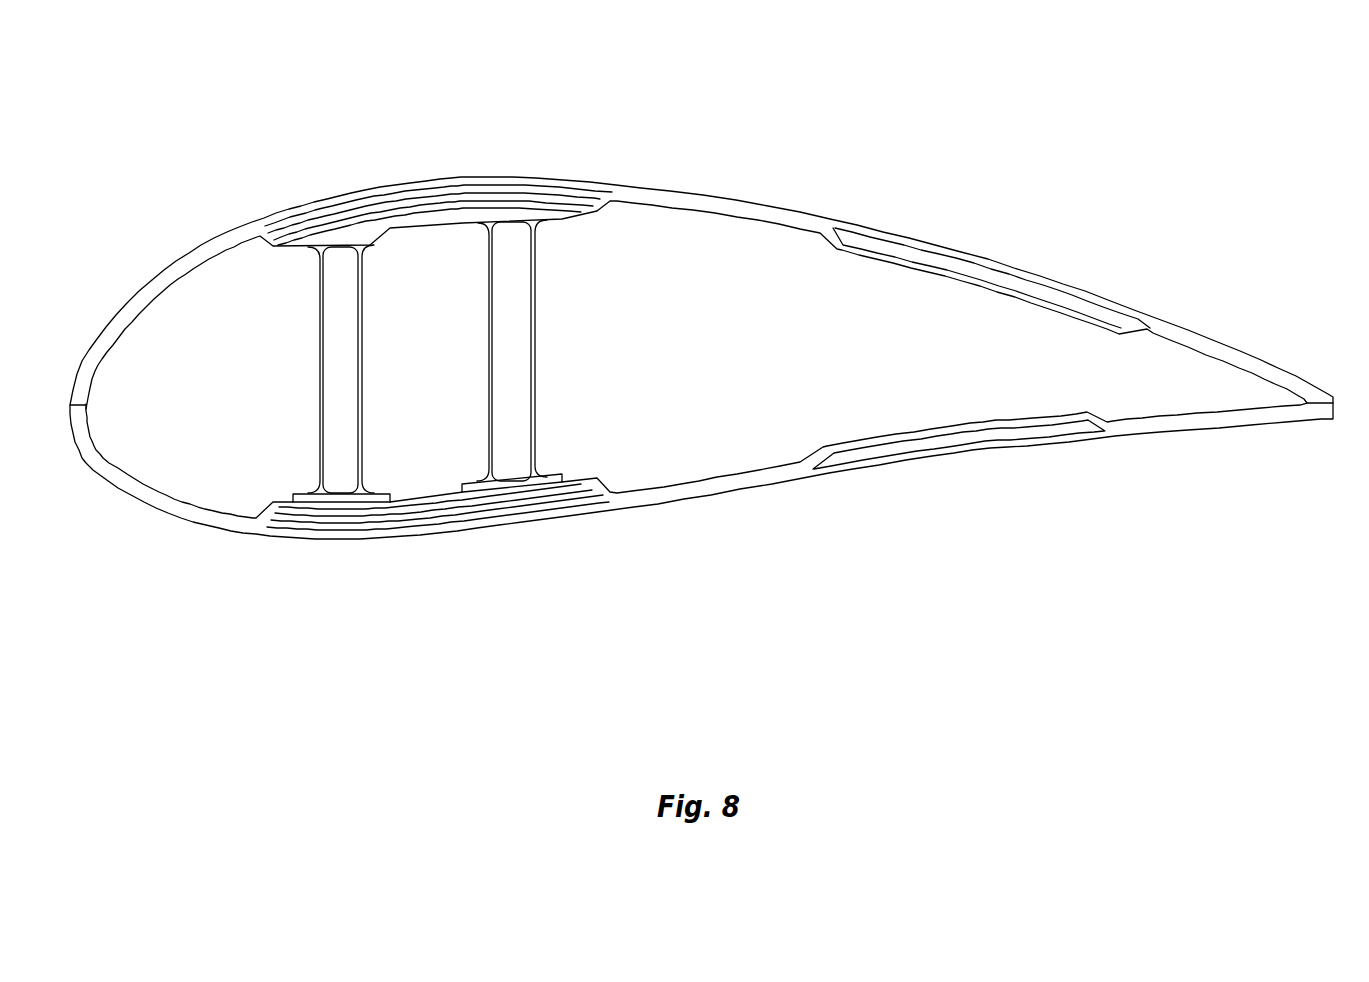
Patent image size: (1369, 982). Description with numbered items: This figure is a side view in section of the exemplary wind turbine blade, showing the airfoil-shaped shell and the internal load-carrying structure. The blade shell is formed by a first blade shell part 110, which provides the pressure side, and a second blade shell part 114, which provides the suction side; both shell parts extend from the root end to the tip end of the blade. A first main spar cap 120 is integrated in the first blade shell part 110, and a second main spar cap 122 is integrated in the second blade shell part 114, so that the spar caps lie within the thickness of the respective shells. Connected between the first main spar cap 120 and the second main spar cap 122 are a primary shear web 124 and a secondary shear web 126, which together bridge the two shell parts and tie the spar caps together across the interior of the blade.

The first blade shell part 110 is at (772, 488).
The second blade shell part 114 is at (750, 200).
The first main spar cap 120 is at (550, 528).
The second main spar cap 122 is at (388, 183).
The primary shear web 124 is at (363, 350).
The secondary shear web 126 is at (538, 343).